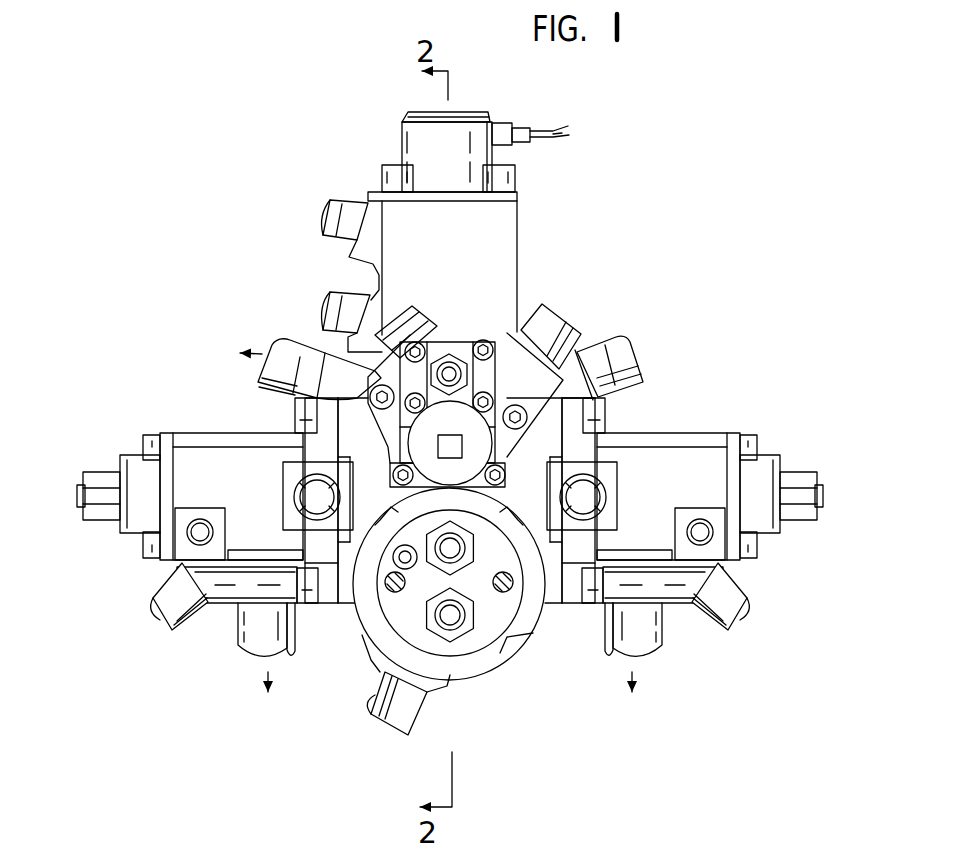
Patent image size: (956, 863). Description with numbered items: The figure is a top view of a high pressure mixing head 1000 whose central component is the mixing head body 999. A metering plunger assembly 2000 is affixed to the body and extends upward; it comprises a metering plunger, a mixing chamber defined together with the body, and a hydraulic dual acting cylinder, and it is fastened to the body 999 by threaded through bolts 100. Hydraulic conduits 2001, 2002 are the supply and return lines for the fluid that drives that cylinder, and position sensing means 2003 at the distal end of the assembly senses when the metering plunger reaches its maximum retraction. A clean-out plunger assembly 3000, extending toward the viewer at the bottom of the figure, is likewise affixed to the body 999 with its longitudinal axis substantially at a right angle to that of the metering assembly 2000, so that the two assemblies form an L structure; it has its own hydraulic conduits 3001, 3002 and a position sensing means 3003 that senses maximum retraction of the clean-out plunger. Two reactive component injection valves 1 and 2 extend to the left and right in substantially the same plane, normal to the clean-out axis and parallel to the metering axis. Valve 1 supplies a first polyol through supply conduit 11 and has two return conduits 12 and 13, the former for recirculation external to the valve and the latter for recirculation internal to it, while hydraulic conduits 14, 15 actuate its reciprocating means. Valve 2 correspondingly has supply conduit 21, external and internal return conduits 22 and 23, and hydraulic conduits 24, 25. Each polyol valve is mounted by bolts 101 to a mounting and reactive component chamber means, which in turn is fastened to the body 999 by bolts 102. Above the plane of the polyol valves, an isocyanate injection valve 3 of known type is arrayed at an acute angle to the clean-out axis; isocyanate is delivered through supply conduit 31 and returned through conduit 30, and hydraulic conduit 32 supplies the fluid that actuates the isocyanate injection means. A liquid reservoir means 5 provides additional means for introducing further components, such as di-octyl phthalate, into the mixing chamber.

The reactive component injection valve 1 is at (127, 590).
The reactive component injection valve 2 is at (772, 590).
The isocyanate injection valve 3 is at (471, 337).
The reservoir means 5 is at (415, 452).
The supply conduit 11 is at (314, 497).
The return conduit 12 is at (293, 352).
The return conduit 13 is at (243, 643).
The hydraulic conduit 14 is at (203, 519).
The hydraulic conduit 15 is at (173, 630).
The supply conduit 21 is at (710, 497).
The return conduit 22 is at (618, 352).
The return conduit 23 is at (660, 643).
The hydraulic conduit 24 is at (702, 519).
The hydraulic conduit 25 is at (727, 630).
The return conduit 30 is at (423, 322).
The isocyanate supply conduit 31 is at (515, 330).
The hydraulic conduit 32 is at (448, 362).
The bolts 100 is at (395, 168).
The bolts 101 is at (152, 438).
The bolts 102 is at (297, 420).
The mixing head body 999 is at (546, 429).
The high pressure mixing head 1000 is at (618, 134).
The metering plunger assembly 2000 is at (524, 236).
The hydraulic conduit 2001 is at (352, 205).
The hydraulic conduit 2002 is at (350, 297).
The position sensing means 2003 is at (468, 112).
The clean-out plunger assembly 3000 is at (355, 630).
The hydraulic conduit 3001 is at (378, 708).
The hydraulic conduit 3002 is at (466, 558).
The position sensing means 3003 is at (460, 626).